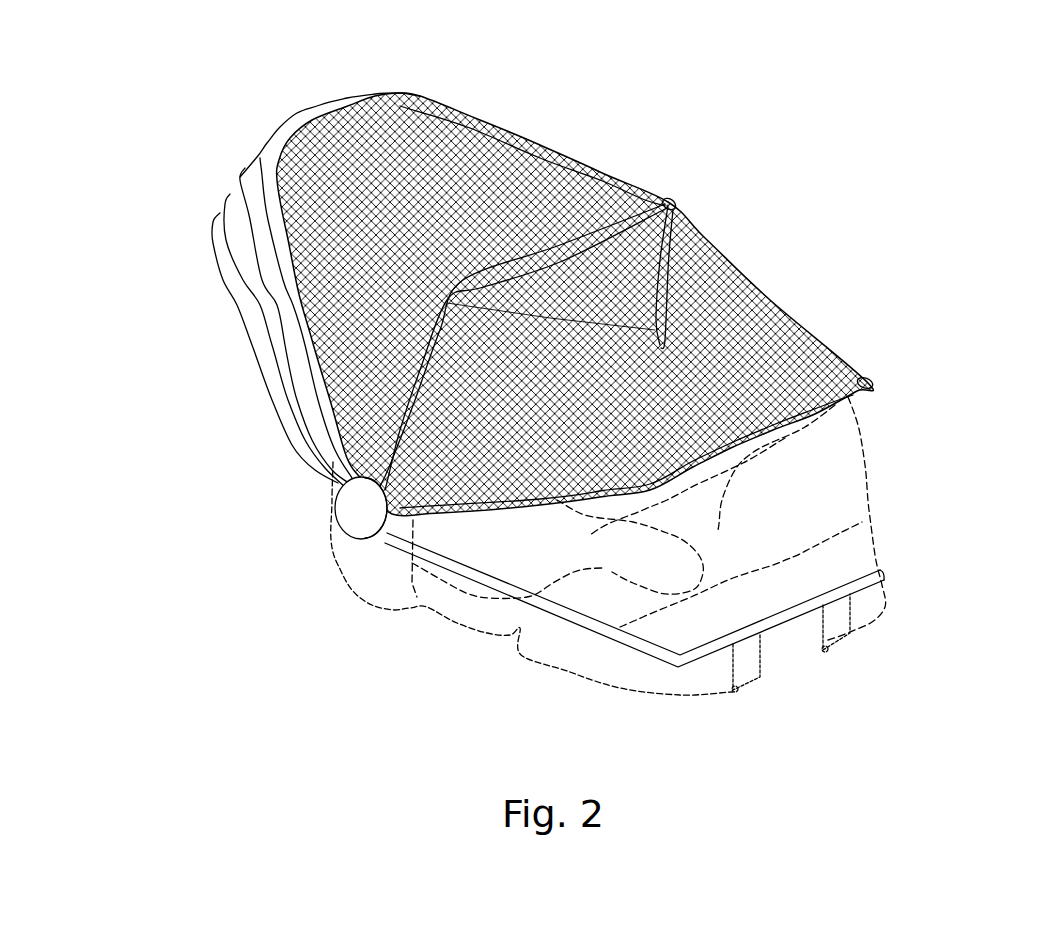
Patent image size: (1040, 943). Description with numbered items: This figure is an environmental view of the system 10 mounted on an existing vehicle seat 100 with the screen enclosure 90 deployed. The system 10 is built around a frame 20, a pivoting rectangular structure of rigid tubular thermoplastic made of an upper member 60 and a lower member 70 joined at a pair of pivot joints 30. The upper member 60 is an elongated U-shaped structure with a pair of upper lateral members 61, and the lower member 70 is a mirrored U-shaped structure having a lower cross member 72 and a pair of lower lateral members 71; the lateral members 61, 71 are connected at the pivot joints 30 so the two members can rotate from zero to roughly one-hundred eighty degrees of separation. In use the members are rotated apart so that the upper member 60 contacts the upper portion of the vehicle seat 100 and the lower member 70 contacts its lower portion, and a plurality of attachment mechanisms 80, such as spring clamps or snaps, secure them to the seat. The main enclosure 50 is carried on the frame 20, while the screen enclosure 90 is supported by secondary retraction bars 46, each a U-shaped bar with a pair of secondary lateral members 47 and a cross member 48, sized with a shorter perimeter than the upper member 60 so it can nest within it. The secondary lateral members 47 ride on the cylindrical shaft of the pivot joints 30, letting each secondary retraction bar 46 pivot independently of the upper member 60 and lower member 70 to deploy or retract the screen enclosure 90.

The system 10 is at (541, 404).
The frame 20 is at (577, 553).
The pivot joint 30 is at (360, 530).
The secondary retraction bar 46 is at (673, 203).
The secondary lateral member 47 is at (420, 357).
The cross member 48 is at (643, 200).
The main enclosure 50 is at (565, 300).
The upper member 60 is at (211, 327).
The upper lateral member 61 is at (213, 247).
The lower member 70 is at (659, 658).
The lower lateral member 71 is at (617, 633).
The lower cross member 72 is at (777, 617).
The attachment mechanism 80 is at (747, 663).
The screen enclosure 90 is at (593, 170).
The vehicle seat 100 is at (850, 550).